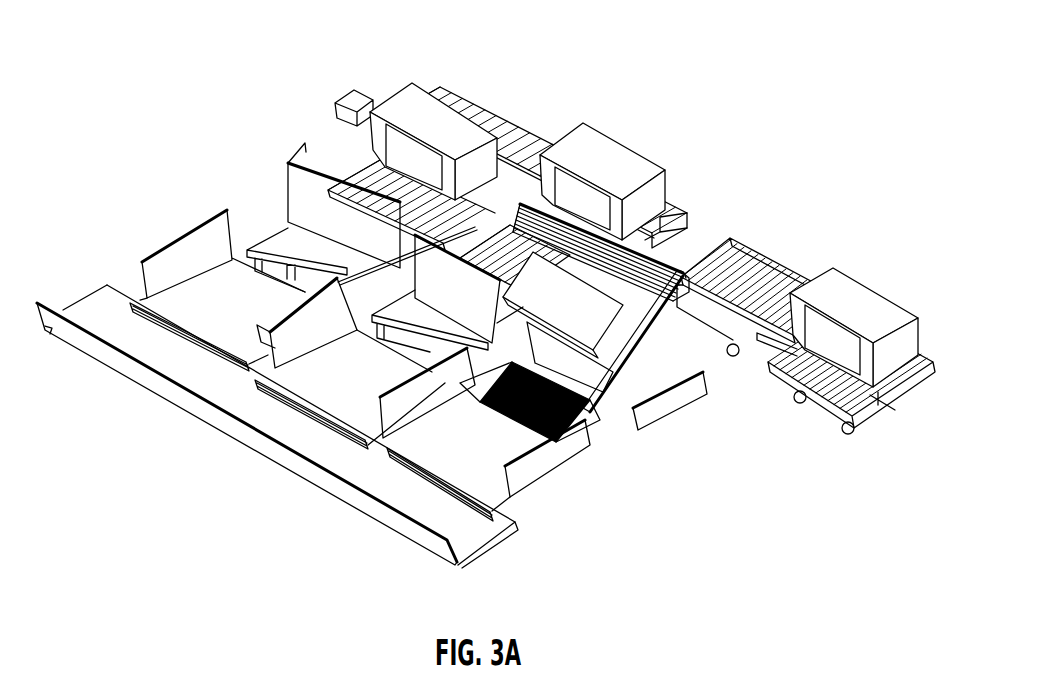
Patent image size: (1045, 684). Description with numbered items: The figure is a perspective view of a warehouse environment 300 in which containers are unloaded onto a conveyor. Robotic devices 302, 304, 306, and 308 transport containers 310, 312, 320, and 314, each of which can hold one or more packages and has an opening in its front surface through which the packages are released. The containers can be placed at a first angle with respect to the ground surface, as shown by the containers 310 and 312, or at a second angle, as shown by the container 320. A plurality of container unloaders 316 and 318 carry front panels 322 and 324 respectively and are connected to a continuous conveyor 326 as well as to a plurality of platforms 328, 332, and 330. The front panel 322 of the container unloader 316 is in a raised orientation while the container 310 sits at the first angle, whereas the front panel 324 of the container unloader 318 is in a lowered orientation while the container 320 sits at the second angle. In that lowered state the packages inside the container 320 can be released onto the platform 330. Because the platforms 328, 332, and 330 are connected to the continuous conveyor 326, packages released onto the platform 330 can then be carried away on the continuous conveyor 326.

The warehouse environment 300 is at (222, 108).
The robotic device 302 is at (514, 121).
The robotic device 304 is at (672, 217).
The robotic device 306 is at (732, 285).
The robotic device 308 is at (912, 372).
The container 310 is at (420, 110).
The container 312 is at (620, 165).
The container 314 is at (866, 305).
The container unloader 316 is at (368, 170).
The container unloader 318 is at (648, 277).
The container 320 is at (632, 362).
The front panel 322 is at (330, 203).
The front panel 324 is at (567, 425).
The continuous conveyor 326 is at (225, 400).
The platform 328 is at (225, 305).
The platform 330 is at (468, 440).
The platform 332 is at (355, 393).